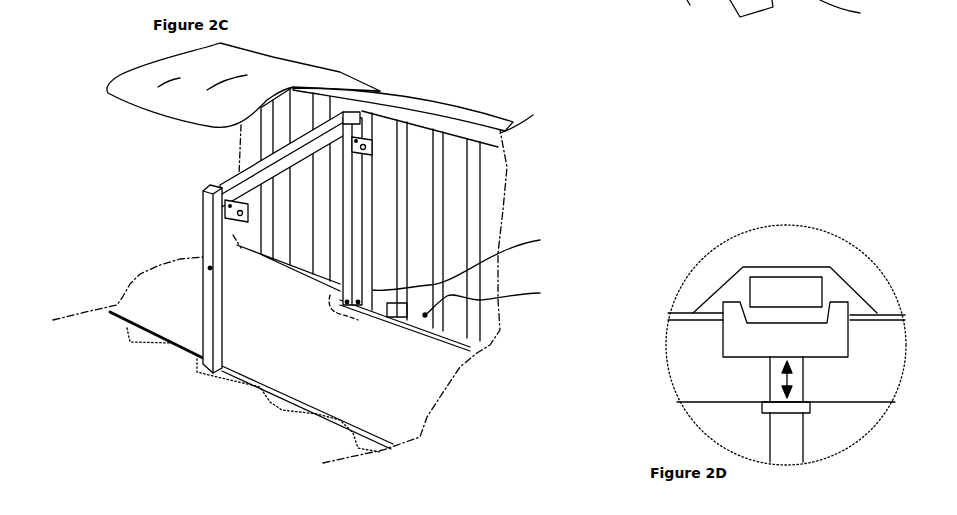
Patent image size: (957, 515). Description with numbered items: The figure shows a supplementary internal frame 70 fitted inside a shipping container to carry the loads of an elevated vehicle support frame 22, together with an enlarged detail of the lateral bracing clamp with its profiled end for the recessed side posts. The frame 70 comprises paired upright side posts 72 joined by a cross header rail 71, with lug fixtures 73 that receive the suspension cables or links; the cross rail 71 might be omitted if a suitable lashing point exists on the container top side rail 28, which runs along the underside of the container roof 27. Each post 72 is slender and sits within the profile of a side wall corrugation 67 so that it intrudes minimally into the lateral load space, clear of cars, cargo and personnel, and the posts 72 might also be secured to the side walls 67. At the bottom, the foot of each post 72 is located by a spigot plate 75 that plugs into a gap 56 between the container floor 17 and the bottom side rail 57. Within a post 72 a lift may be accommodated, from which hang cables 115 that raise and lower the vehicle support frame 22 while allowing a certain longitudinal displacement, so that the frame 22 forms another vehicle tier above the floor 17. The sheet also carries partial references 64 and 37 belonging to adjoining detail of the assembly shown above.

In FIG. 2C, the partition 17 is at (381, 381).
In FIG. 2C, the cover 27 is at (250, 65).
In FIG. 2C, the top rail 28 is at (327, 93).
In FIG. 2C, the lower rail 56 is at (467, 260).
In FIG. 2C, the lower rail edge 57 is at (474, 300).
In FIG. 2C, the slats / housing 67 is at (468, 150).
In FIG. 2D, the slats / housing 67 is at (730, 278).
In FIG. 2C, the frame 70 is at (160, 202).
In FIG. 2C, the horizontal beam 71 is at (352, 112).
In FIG. 2C, the vertical post 72 is at (210, 268).
In FIG. 2D, the vertical post 72 is at (793, 283).
In FIG. 2C, the bracket 73 is at (372, 118).
In FIG. 2C, the base plate 75 is at (483, 335).
In FIG. 2D, the base 22 is at (717, 415).
In FIG. 2D, the stem block 115 is at (830, 342).
In FIG. 2D, the fragment element 64 is at (720, 13).
In FIG. 2D, the fragment element 37 is at (852, 13).